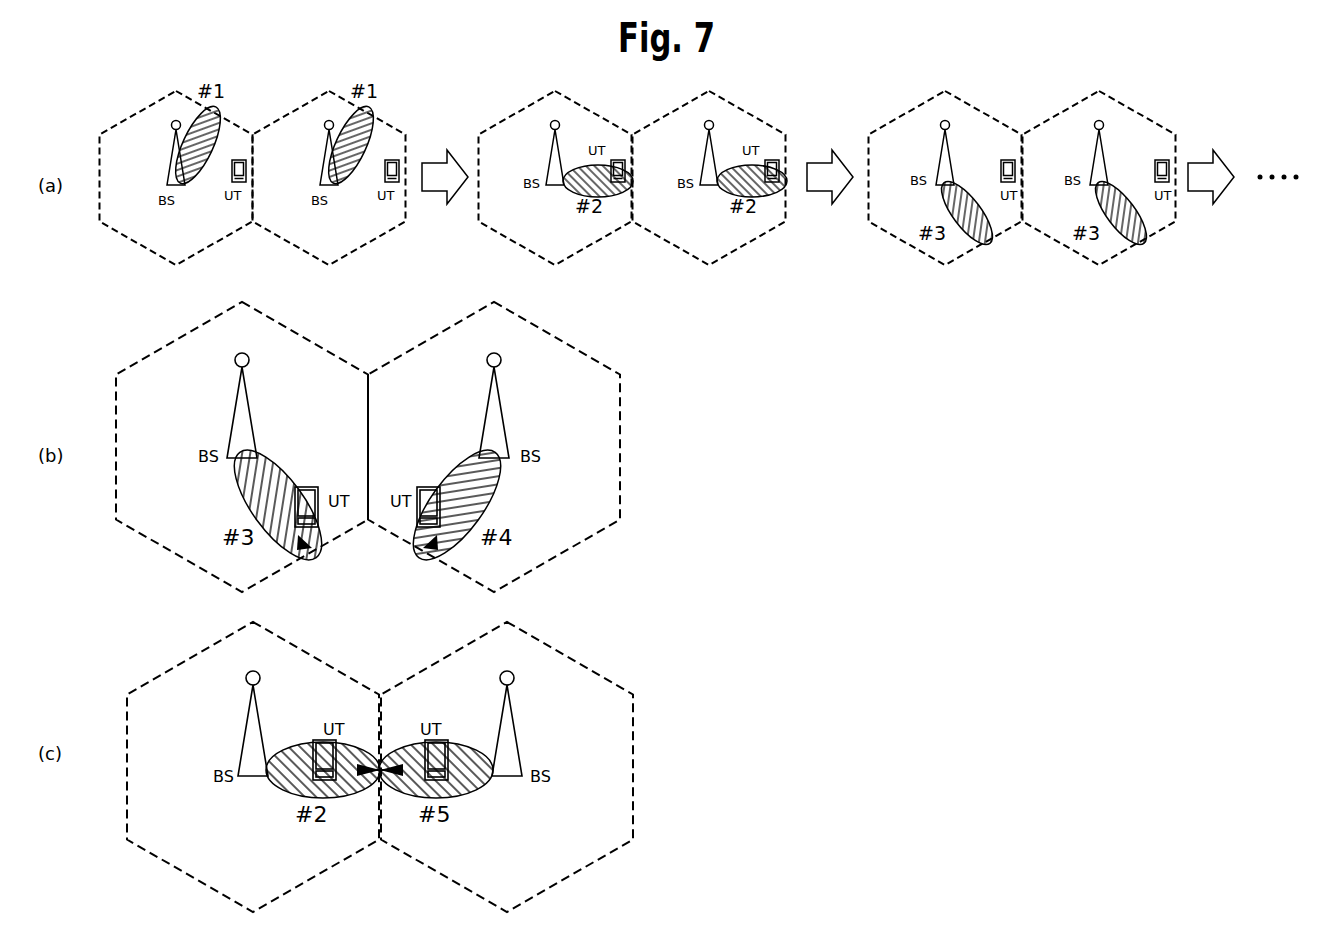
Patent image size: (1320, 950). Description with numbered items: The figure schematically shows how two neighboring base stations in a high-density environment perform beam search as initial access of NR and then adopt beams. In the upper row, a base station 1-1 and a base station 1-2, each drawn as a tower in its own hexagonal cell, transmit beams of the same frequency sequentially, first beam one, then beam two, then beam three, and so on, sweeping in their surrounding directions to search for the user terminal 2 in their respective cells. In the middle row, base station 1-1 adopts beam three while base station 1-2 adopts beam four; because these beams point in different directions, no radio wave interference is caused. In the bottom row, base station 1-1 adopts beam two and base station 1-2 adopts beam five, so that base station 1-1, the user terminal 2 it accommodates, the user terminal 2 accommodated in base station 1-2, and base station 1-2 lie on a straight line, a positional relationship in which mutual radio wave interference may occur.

The base station 1-1 is at (533, 449).
The base station 1-2 is at (687, 449).
The user terminal 2 is at (700, 434).